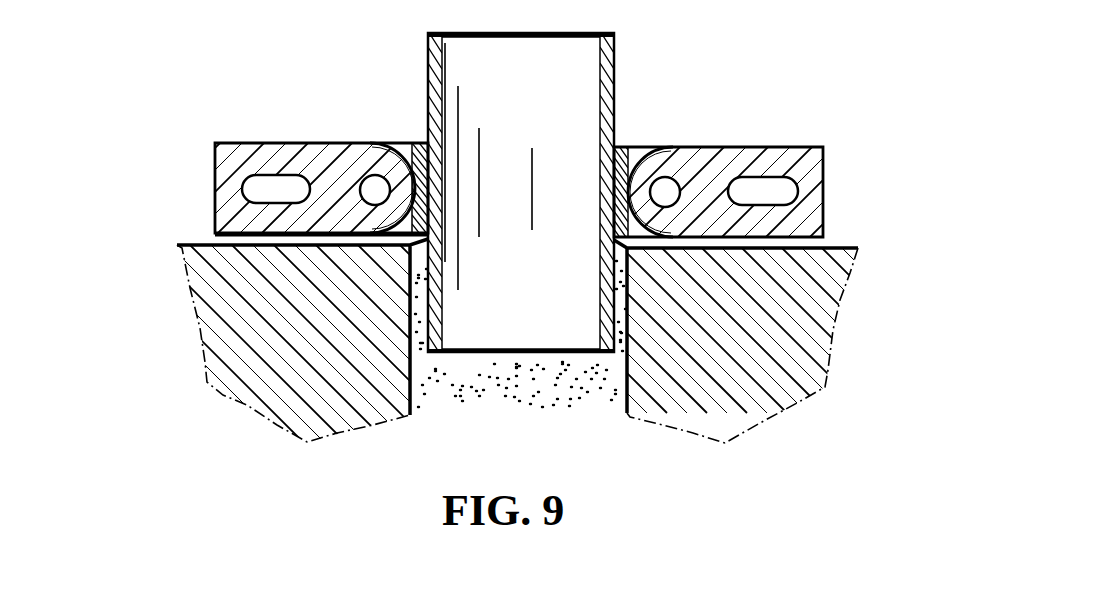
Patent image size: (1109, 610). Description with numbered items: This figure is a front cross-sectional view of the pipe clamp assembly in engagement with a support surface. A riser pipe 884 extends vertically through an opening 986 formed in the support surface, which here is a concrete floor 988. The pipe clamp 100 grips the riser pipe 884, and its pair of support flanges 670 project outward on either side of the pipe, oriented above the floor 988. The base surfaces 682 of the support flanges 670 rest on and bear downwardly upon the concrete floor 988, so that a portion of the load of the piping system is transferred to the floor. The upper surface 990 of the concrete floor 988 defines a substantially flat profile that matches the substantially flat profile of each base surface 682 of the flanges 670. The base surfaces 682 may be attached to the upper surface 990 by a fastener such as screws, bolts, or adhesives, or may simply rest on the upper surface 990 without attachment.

The riser pipe 884 is at (614, 70).
The support flanges 670 is at (264, 125).
The pipe clamp 100 is at (402, 125).
The base surfaces 682 is at (272, 240).
The concrete floor 988 is at (275, 355).
The upper surface 990 is at (836, 247).
The opening 986 is at (578, 368).